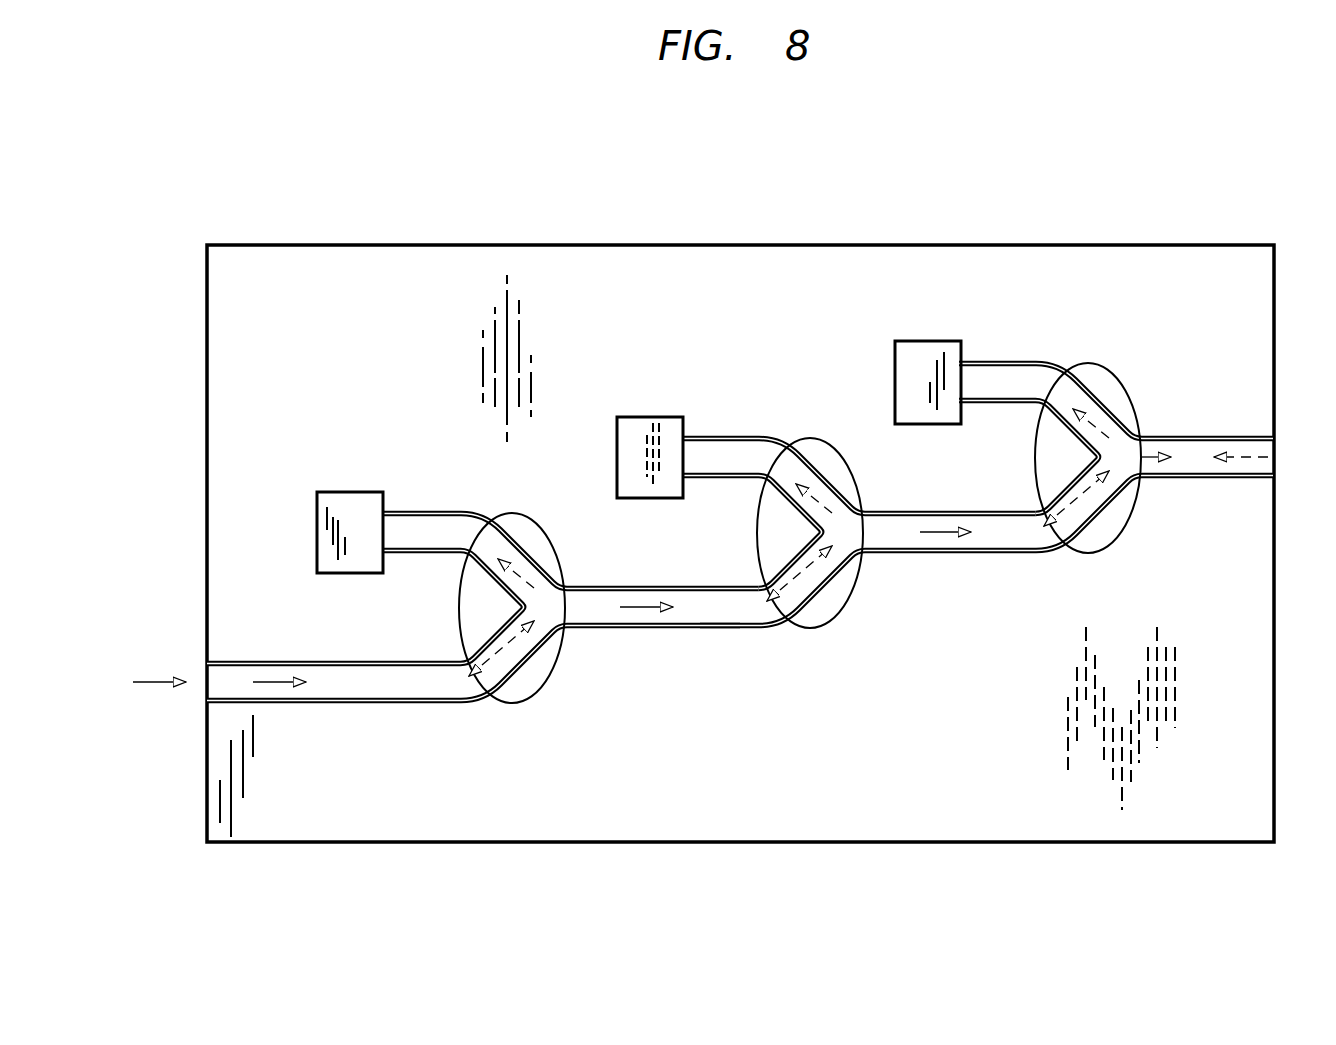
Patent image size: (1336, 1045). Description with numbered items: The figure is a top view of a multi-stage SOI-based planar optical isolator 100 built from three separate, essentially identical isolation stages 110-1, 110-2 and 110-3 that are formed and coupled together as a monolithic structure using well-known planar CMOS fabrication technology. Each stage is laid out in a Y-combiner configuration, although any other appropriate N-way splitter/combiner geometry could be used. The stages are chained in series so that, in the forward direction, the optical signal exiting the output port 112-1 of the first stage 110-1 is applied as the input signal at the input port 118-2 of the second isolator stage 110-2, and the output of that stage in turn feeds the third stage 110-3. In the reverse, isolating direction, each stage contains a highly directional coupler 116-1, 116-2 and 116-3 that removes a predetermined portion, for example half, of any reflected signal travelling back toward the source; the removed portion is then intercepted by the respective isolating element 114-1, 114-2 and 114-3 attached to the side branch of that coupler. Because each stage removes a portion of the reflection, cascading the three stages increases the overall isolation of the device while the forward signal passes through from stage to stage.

The multi-stage SOI-based planar optical isolator 100 is at (1252, 170).
The first isolation stage 110-1 is at (567, 223).
The second isolation stage 110-2 is at (865, 223).
The third isolation stage 110-3 is at (1145, 223).
The output port 112-1 is at (663, 587).
The isolating element 114-1 is at (340, 503).
The isolating element 114-2 is at (643, 430).
The isolating element 114-3 is at (920, 353).
The highly directional coupler 116-1 is at (547, 685).
The highly directional coupler 116-2 is at (845, 608).
The highly directional coupler 116-3 is at (1123, 540).
The input port 118-2 is at (705, 610).